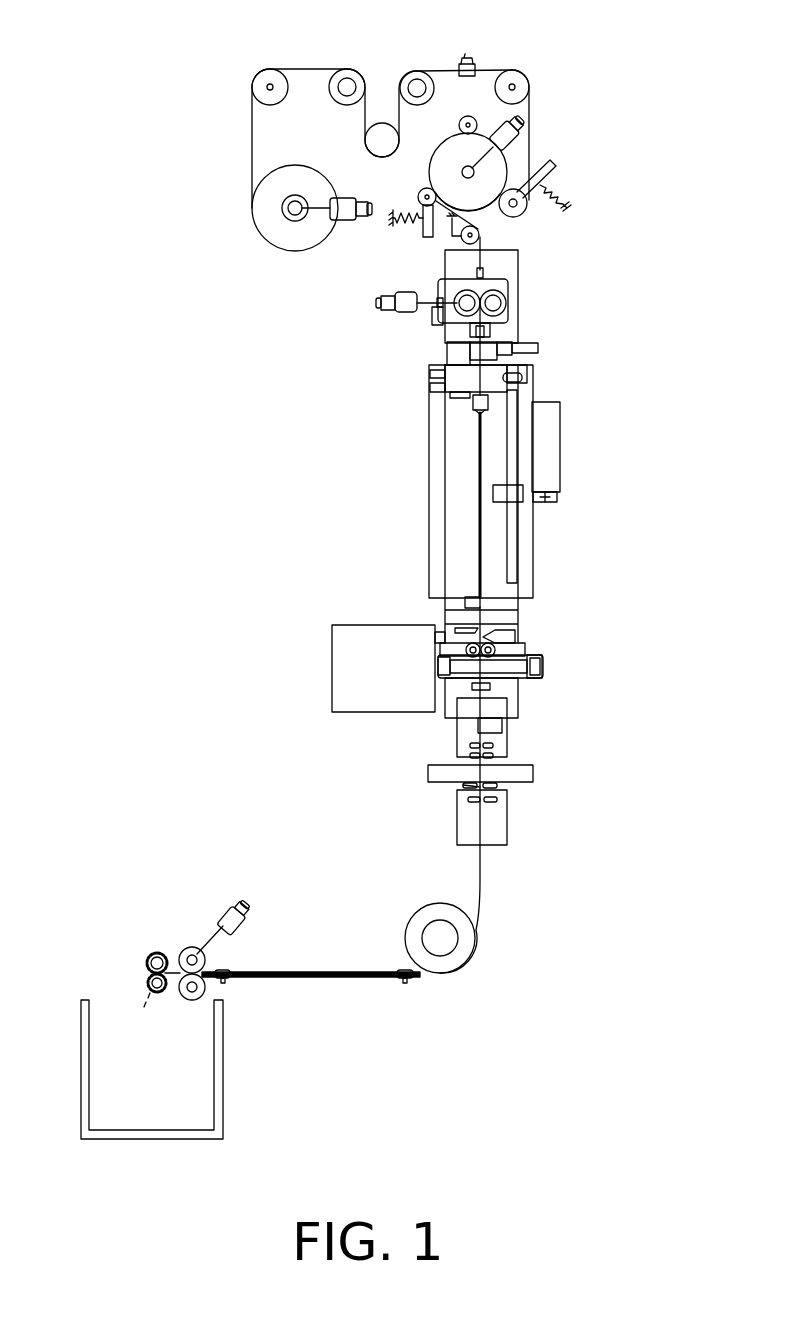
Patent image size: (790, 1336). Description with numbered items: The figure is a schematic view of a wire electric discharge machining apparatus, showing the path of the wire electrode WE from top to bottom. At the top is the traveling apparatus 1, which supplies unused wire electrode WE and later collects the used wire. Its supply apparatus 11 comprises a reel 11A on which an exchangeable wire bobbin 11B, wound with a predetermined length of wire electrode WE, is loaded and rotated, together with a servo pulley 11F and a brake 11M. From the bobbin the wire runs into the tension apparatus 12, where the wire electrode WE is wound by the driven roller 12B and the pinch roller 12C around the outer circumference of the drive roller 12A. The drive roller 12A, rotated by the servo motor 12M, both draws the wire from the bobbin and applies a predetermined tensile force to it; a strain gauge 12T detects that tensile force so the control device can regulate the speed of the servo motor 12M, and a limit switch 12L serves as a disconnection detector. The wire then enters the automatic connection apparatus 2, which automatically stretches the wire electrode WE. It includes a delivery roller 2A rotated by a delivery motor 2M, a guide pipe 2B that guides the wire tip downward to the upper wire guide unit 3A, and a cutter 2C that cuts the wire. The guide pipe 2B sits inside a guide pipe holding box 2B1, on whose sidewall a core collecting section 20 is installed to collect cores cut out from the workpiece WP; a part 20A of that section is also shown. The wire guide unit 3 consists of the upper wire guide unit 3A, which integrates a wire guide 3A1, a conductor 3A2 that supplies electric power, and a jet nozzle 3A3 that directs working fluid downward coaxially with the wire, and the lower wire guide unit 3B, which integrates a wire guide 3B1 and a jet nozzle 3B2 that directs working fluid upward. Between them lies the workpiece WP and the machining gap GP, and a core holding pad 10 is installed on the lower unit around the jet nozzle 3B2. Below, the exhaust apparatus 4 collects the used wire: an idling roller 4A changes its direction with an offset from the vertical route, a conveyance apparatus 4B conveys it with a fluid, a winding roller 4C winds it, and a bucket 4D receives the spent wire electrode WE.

The traveling apparatus 1 is at (620, 102).
The wire electrode WE is at (300, 68).
The supply apparatus 11 is at (293, 215).
The reel 11A is at (290, 210).
The wire bobbin 11B is at (287, 240).
The servo pulley 11F is at (372, 140).
The brake 11M is at (345, 222).
The tension apparatus 12 is at (543, 64).
The drive roller 12A is at (505, 163).
The driven roller 12B is at (527, 212).
The pinch roller 12C is at (423, 192).
The limit switch 12L is at (470, 63).
The servo motor 12M is at (523, 128).
The strain gauge 12T is at (480, 237).
The automatic connection apparatus 2 is at (470, 446).
The delivery roller 2A is at (458, 312).
The delivery motor 2M is at (377, 303).
The guide pipe 2B is at (477, 480).
The guide pipe holding box 2B1 is at (437, 430).
The cutter 2C is at (517, 632).
The core collecting section 20 is at (560, 440).
The drive unit connector 20A is at (555, 500).
The wire guide unit 3 is at (493, 762).
The upper wire guide unit 3A is at (498, 700).
The wire guide 3A1 is at (493, 748).
The conductor 3A2 is at (490, 723).
The jet nozzle 3A3 is at (473, 758).
The lower wire guide unit 3B is at (486, 832).
The wire guide 3B1 is at (498, 800).
The jet nozzle 3B2 is at (463, 812).
The machining gap GP is at (480, 772).
The workpiece WP is at (533, 775).
The core holding pad 10 is at (463, 786).
The exhaust apparatus 4 is at (297, 1018).
The idling roller 4A is at (457, 958).
The conveyance apparatus 4B is at (310, 980).
The winding roller 4C is at (182, 950).
The bucket 4D is at (218, 1055).